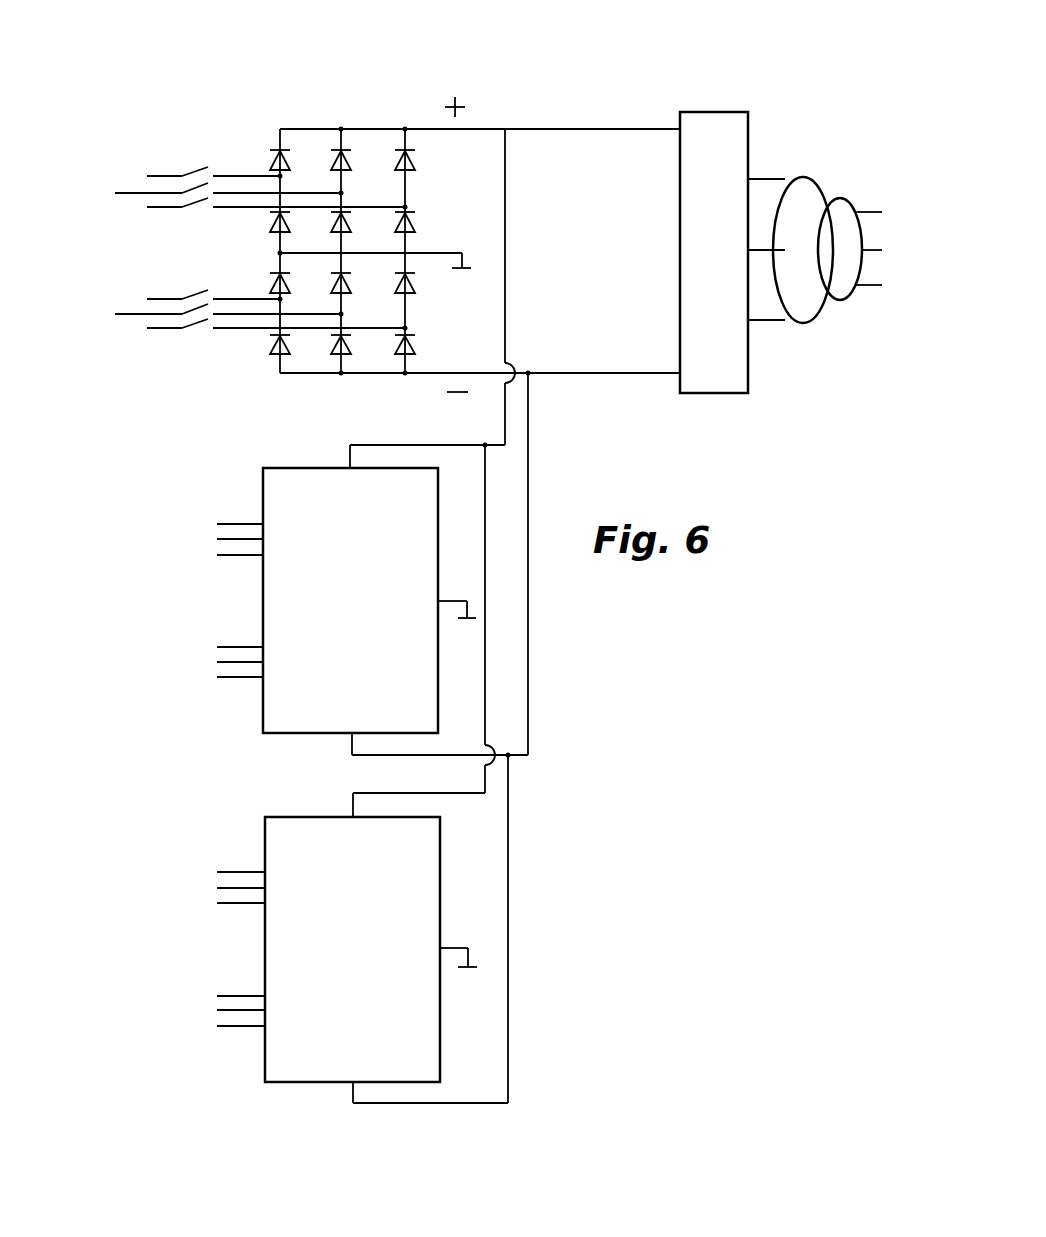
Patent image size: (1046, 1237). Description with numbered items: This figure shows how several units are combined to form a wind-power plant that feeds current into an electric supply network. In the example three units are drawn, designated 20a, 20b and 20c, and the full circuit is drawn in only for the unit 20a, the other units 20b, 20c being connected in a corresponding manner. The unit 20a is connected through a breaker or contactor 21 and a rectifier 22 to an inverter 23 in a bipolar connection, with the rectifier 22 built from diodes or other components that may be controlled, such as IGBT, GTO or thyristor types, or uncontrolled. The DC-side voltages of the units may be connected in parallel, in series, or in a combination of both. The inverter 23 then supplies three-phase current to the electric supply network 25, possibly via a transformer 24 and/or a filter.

The unit 20a is at (248, 218).
The unit 20b is at (279, 600).
The unit 20c is at (280, 949).
The breaker or contactor 21 is at (193, 138).
The rectifier 22 is at (473, 224).
The inverter 23 is at (718, 138).
The transformer 24 is at (800, 200).
The electric supply network 25 is at (843, 280).